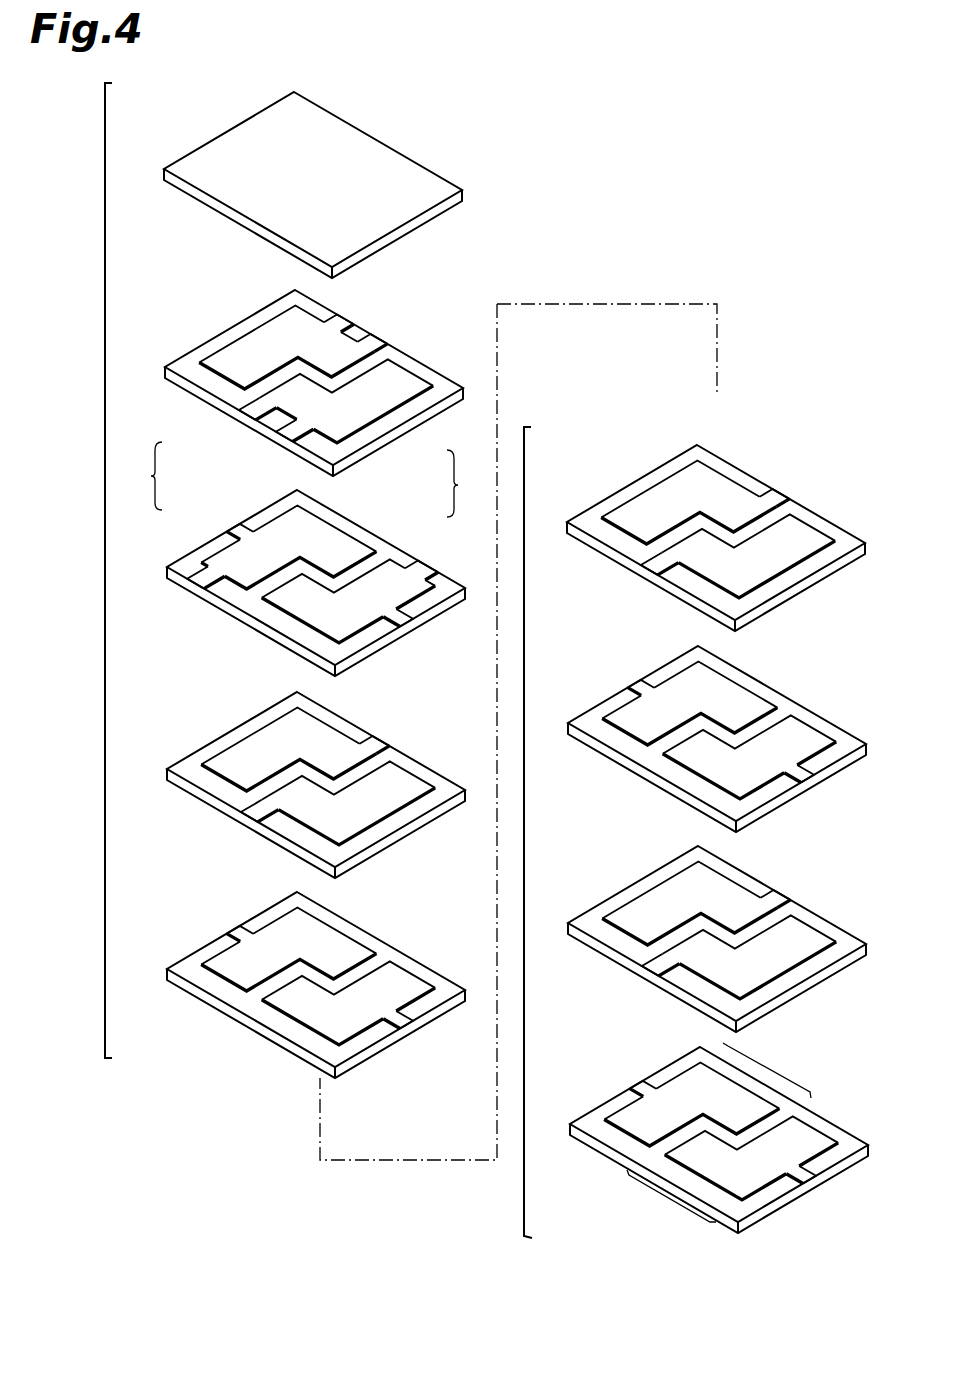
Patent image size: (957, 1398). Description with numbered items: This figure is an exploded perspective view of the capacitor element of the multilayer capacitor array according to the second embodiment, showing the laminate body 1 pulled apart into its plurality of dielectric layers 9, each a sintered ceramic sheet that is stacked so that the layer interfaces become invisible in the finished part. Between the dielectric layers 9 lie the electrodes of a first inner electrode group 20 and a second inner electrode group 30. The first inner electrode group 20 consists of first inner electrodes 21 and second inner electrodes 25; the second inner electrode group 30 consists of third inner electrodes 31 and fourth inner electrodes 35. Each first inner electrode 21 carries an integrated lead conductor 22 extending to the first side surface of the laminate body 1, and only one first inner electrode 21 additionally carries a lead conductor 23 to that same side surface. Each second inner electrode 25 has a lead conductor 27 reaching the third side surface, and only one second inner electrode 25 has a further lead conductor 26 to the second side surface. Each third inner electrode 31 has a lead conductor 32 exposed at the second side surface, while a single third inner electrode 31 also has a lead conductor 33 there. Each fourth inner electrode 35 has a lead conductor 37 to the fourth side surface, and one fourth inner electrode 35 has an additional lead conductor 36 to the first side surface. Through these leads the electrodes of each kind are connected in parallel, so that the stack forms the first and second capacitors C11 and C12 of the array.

The laminate body 1 is at (105, 605).
The dielectric layer 9 is at (173, 989).
The first inner electrode group 20 is at (139, 476).
The first inner electrode 21 is at (470, 626).
The lead conductor 22 is at (602, 605).
The lead conductor 23 is at (330, 316).
The second inner electrode 25 is at (471, 814).
The lead conductor 26 is at (213, 578).
The lead conductor 27 is at (404, 804).
The second inner electrode group 30 is at (472, 483).
The third inner electrode 31 is at (558, 695).
The lead conductor 32 is at (435, 707).
The lead conductor 33 is at (301, 430).
The fourth inner electrode 35 is at (551, 866).
The lead conductor 36 is at (420, 566).
The lead conductor 37 is at (635, 902).
The first capacitor C11 is at (776, 1070).
The second capacitor C12 is at (669, 1203).